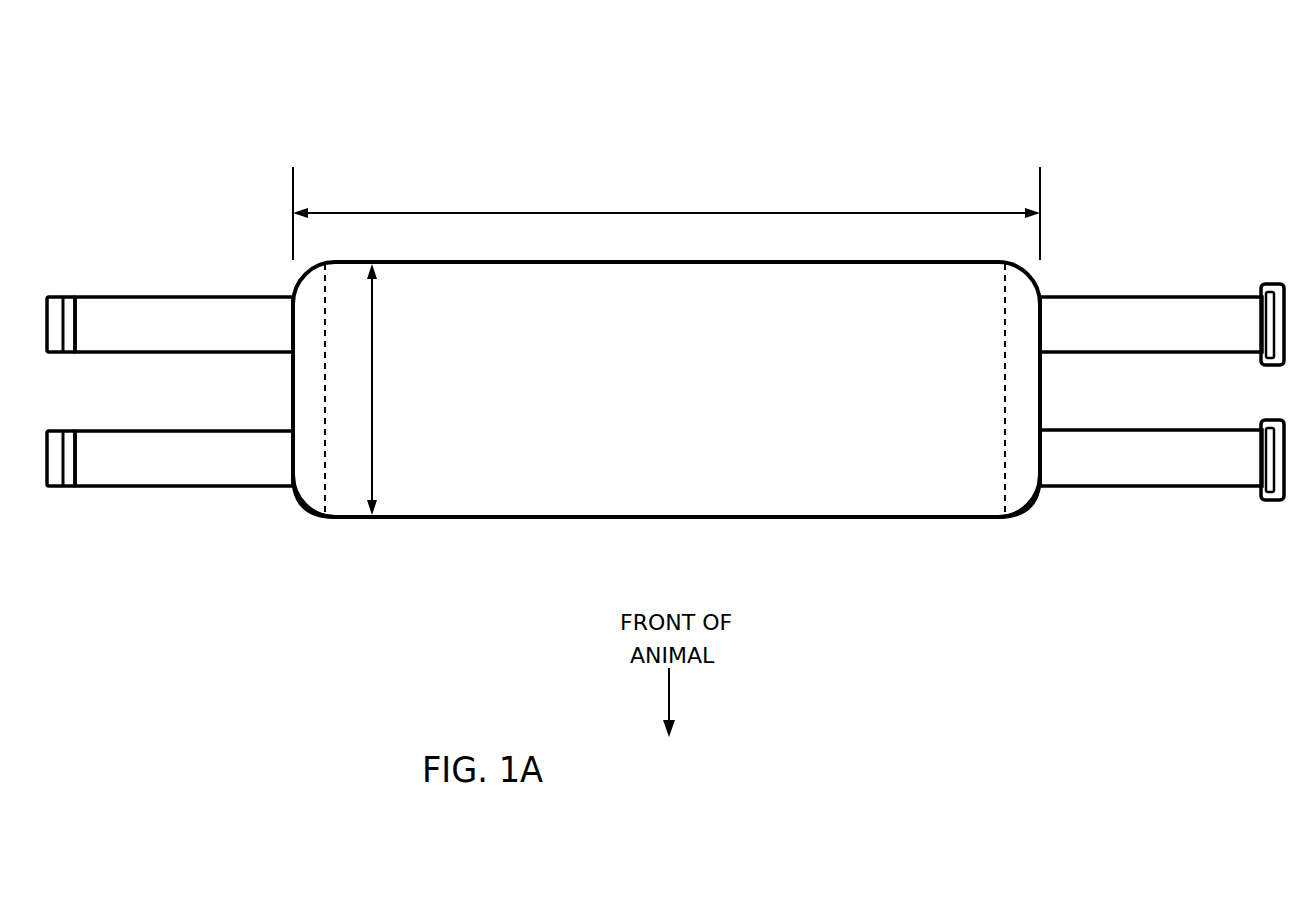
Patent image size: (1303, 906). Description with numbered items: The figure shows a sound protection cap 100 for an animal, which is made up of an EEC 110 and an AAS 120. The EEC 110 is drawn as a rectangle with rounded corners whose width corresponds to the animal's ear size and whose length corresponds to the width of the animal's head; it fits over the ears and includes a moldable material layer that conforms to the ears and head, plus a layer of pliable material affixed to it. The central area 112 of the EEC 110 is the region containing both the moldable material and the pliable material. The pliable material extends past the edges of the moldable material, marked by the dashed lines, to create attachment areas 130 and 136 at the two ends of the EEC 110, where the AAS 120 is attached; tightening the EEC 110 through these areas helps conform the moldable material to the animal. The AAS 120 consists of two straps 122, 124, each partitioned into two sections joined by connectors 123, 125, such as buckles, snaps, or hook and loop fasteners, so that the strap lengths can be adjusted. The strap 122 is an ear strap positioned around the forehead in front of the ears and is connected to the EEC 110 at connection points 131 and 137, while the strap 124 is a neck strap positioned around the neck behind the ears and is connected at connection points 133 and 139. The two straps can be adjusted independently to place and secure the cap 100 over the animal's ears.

The sound protection cap 100 is at (170, 108).
The EEC 110 is at (663, 421).
The area of the EEC including both moldable and pliable material 112 is at (686, 406).
The AAS 120 is at (163, 582).
The strap 122 is at (668, 505).
The connector 123 is at (674, 506).
The strap 124 is at (668, 284).
The connector 125 is at (659, 287).
The attachment area 130 is at (315, 535).
The connection point 131 is at (263, 427).
The connection point 133 is at (265, 293).
The attachment area 136 is at (1018, 541).
The connection point 137 is at (1066, 435).
The connection point 139 is at (1065, 293).